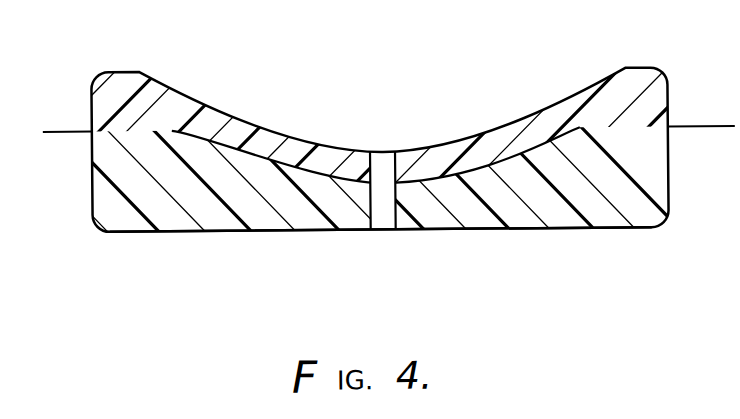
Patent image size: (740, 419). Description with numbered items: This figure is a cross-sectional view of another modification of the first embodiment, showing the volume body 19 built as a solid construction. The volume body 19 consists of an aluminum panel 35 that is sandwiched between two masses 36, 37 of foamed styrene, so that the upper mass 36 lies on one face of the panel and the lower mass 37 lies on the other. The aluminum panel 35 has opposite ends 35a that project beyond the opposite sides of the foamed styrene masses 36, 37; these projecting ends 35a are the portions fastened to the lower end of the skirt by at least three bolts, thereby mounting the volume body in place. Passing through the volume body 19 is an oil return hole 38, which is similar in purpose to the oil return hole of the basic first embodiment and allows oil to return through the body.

The volume body 19 is at (539, 88).
The aluminum panel 35 is at (275, 165).
The opposite ends 35a is at (63, 131).
The mass of foamed styrene 36 is at (212, 120).
The mass of foamed styrene 37 is at (231, 221).
The oil return hole 38 is at (375, 216).